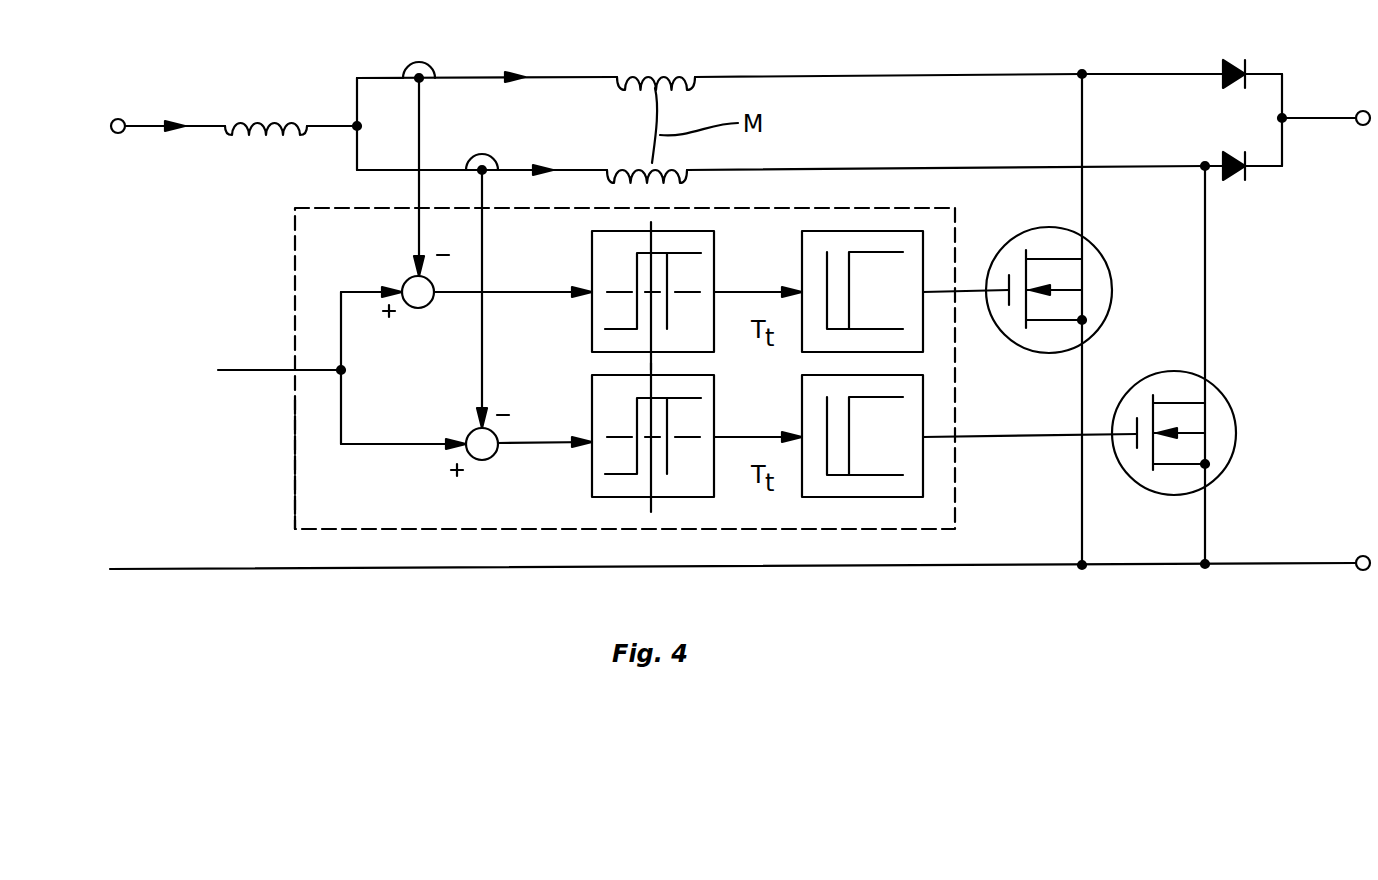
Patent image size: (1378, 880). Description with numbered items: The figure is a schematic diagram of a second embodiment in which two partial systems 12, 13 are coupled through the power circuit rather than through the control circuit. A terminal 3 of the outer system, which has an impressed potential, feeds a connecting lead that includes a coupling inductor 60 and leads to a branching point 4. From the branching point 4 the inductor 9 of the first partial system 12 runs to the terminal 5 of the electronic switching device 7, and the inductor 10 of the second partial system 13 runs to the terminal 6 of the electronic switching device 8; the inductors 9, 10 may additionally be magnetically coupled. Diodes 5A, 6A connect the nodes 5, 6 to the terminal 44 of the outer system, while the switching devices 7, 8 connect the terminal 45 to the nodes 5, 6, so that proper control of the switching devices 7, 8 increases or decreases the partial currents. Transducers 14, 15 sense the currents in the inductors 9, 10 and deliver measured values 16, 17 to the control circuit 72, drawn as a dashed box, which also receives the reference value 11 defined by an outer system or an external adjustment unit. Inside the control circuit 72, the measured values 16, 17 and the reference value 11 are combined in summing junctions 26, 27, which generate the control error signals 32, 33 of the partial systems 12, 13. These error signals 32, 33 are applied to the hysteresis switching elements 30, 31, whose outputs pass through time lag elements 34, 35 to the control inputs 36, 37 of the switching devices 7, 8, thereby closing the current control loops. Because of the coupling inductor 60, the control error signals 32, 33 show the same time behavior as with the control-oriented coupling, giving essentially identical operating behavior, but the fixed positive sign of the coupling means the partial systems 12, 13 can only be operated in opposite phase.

The terminal 3 is at (120, 119).
The coupling inductor 60 is at (243, 116).
The branching point 4 is at (356, 130).
The partial system 12 is at (380, 65).
The transducer 14 is at (432, 62).
The measured value 16 is at (421, 138).
The transducer 15 is at (492, 155).
The measured value 17 is at (482, 350).
The inductor 9 is at (683, 70).
The inductor 10 is at (675, 164).
The terminal 5 is at (1080, 72).
The diode 5A is at (1235, 59).
The diode 6A is at (1226, 152).
The terminal 6 is at (1204, 163).
The terminal 44 is at (1361, 110).
The terminal 45 is at (1362, 555).
The partial system 13 is at (355, 193).
The control circuit 72 is at (295, 453).
The reference value 11 is at (327, 368).
The summing junction 26 is at (418, 310).
The control error signal 32 is at (545, 292).
The summing junction 27 is at (480, 462).
The control error signal 33 is at (533, 445).
The hysteresis switching element 30 is at (592, 262).
The hysteresis switching element 31 is at (592, 413).
The time lag element 34 is at (893, 231).
The time lag element 35 is at (905, 497).
The control input 36 is at (968, 290).
The control input 37 is at (1024, 437).
The electronic switching device 7 is at (1100, 238).
The electronic switching device 8 is at (1171, 370).